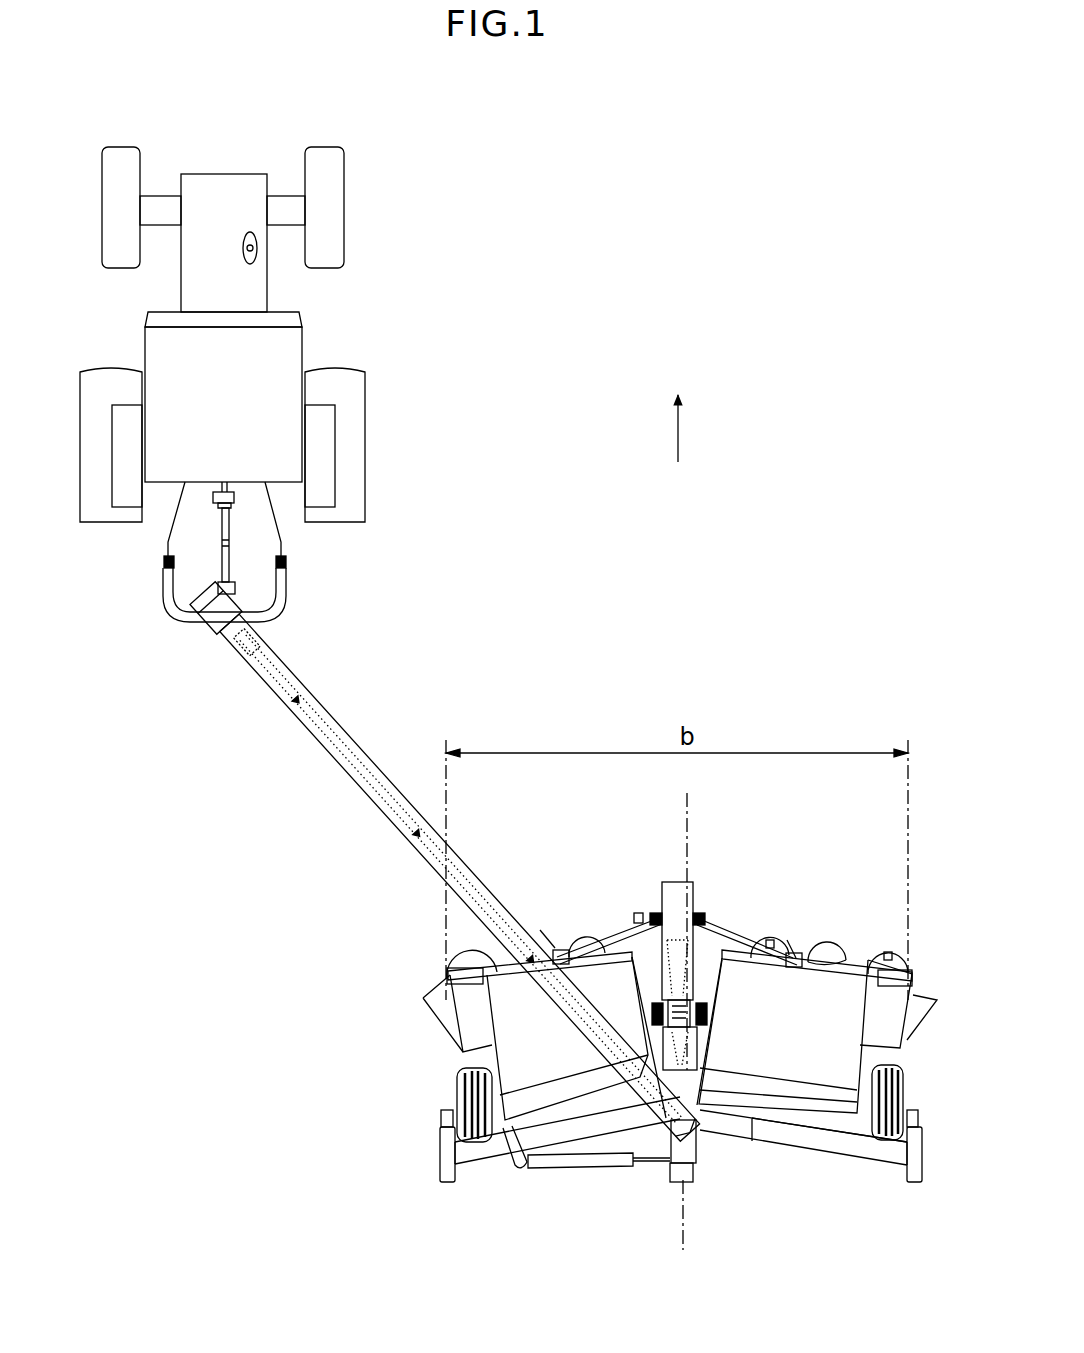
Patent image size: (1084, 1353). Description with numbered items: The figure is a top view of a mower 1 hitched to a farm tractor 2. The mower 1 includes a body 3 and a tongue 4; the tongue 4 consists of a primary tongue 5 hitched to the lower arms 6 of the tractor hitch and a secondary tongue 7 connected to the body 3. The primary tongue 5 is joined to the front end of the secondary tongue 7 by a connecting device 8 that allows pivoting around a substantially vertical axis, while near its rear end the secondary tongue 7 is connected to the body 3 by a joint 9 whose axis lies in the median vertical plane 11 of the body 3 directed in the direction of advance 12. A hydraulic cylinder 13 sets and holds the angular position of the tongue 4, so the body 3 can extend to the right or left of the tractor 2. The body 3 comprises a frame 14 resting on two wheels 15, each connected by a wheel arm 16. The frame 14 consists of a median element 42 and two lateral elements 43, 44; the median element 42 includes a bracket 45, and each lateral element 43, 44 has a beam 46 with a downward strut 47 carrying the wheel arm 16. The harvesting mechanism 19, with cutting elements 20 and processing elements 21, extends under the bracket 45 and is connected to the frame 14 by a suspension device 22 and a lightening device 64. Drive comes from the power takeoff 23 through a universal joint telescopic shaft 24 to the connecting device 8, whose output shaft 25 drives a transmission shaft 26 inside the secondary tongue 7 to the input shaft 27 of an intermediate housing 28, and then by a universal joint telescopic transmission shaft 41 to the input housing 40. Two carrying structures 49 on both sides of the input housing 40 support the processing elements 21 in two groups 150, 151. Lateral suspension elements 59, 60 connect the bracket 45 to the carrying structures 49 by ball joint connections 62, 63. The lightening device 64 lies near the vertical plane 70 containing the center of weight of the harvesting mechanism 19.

The mower 1 is at (508, 727).
The farm tractor 2 is at (296, 331).
The body 3 is at (380, 1018).
The tongue 4 is at (545, 935).
The primary tongue 5 is at (284, 586).
The lower arms 6 is at (165, 544).
The secondary tongue 7 is at (442, 893).
The connecting device 8 is at (202, 631).
The joint 9 is at (668, 1171).
The median vertical plane 11 is at (682, 1216).
The direction of advance 12 is at (678, 437).
The hydraulic cylinder 13 is at (566, 1168).
The frame 14 is at (752, 1150).
The wheels 15 is at (460, 1073).
The wheel arm 16 is at (443, 1112).
The harvesting mechanism 19 is at (778, 896).
The cutting elements 20 is at (633, 918).
The processing elements 21 is at (550, 1024).
The suspension device 22 is at (712, 921).
The power takeoff 23 is at (221, 491).
The universal joint telescopic shaft 24 is at (221, 547).
The output shaft 25 is at (283, 634).
The transmission shaft 26 is at (438, 899).
The input shaft 27 is at (622, 1096).
The intermediate housing 28 is at (700, 1140).
The input housing 40 is at (652, 914).
The universal joint telescopic transmission shaft 41 is at (706, 986).
The median element 42 is at (702, 1049).
The lateral element 43 is at (502, 1167).
The lateral element 44 is at (856, 1162).
The bracket 45 is at (672, 882).
The beam 46 is at (471, 1157).
The strut 47 is at (440, 1143).
The carrying structures 49 is at (588, 963).
The lateral suspension element 59 is at (570, 946).
The lateral suspension element 60 is at (788, 955).
The ball joint connection 62 is at (548, 946).
The ball joint connection 63 is at (830, 956).
The lightening device 64 is at (706, 1012).
The vertical plane 70 is at (706, 806).
The group of processing elements 150 is at (543, 1065).
The group of processing elements 151 is at (848, 1065).